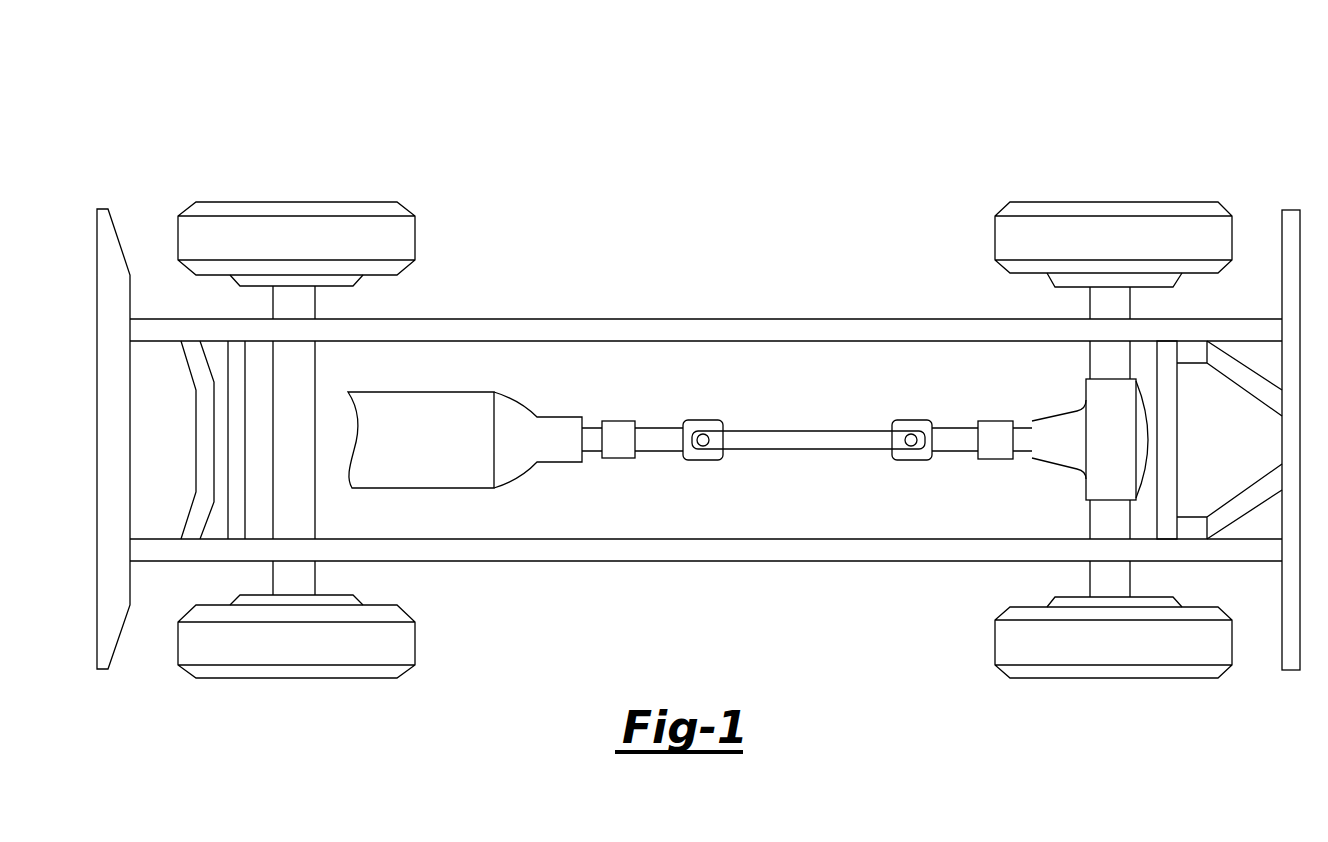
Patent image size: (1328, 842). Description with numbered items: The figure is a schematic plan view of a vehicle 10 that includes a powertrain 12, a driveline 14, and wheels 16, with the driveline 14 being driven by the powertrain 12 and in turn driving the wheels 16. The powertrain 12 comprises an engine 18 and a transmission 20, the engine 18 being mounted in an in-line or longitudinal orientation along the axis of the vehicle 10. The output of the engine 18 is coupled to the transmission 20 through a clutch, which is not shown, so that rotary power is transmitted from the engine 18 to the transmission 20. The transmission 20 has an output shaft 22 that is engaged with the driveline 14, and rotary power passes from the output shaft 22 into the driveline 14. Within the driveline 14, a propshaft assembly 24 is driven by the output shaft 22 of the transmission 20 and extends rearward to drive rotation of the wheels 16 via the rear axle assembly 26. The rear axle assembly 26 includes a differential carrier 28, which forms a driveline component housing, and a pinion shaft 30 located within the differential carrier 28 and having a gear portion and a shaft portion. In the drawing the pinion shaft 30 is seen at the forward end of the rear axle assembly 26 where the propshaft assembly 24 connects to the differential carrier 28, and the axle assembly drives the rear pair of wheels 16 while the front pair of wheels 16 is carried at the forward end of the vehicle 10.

The vehicle 10 is at (303, 135).
The powertrain 12 is at (486, 395).
The driveline 14 is at (811, 370).
The wheels 16 is at (1124, 202).
The engine 18 is at (445, 470).
The transmission 20 is at (560, 463).
The output shaft 22 is at (596, 427).
The propshaft assembly 24 is at (809, 422).
The rear axle assembly 26 is at (1052, 398).
The differential carrier 28 is at (1053, 467).
The pinion shaft 30 is at (1022, 430).